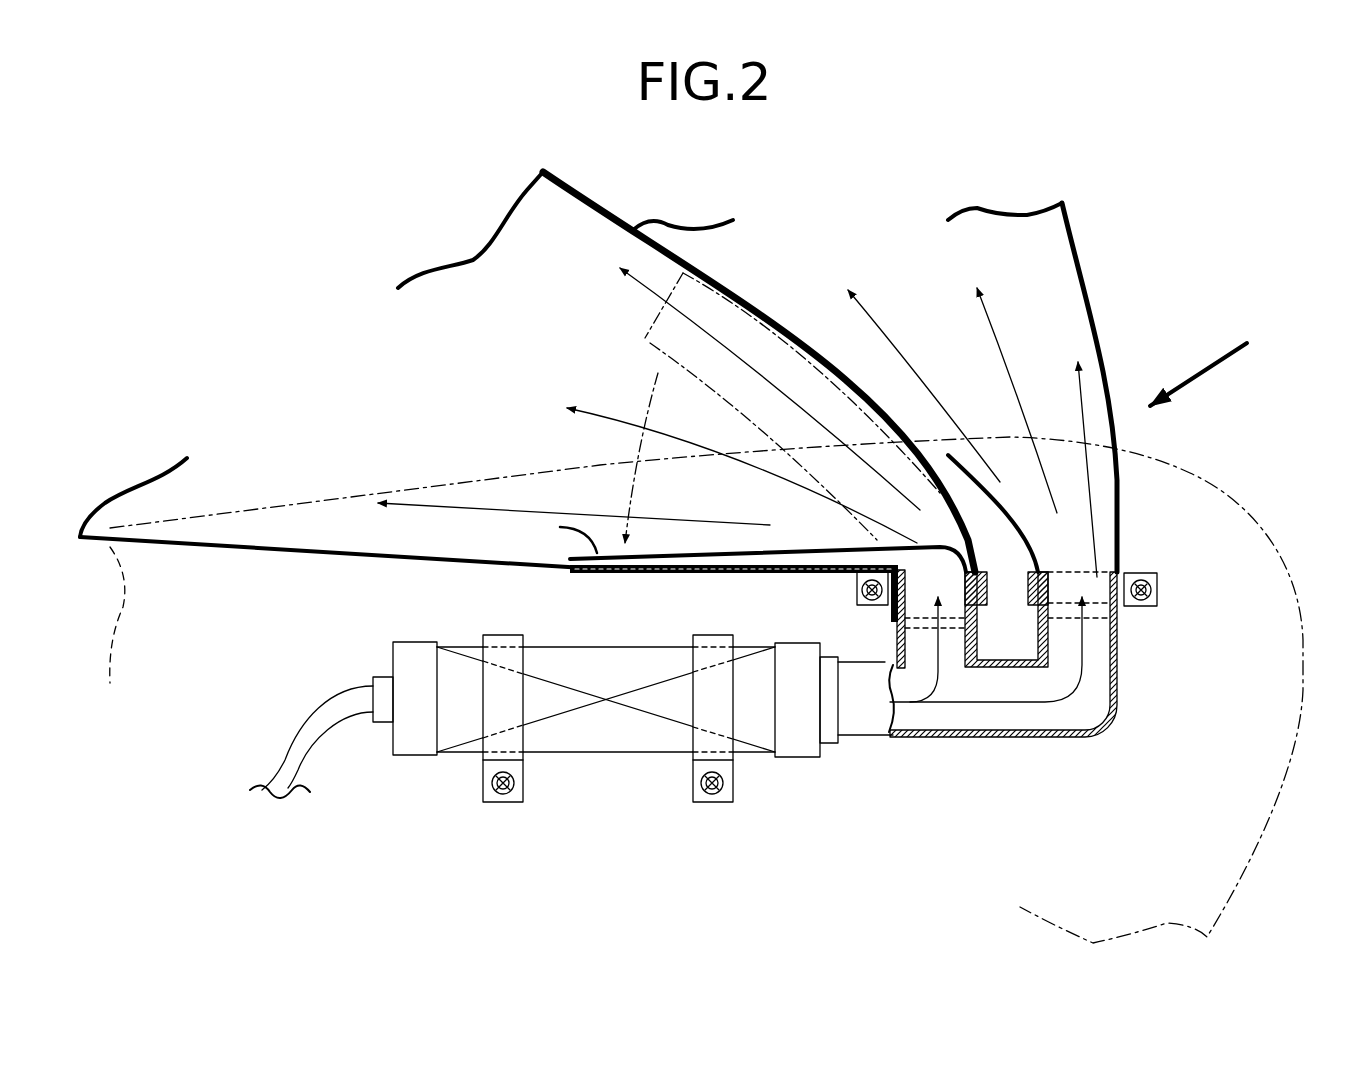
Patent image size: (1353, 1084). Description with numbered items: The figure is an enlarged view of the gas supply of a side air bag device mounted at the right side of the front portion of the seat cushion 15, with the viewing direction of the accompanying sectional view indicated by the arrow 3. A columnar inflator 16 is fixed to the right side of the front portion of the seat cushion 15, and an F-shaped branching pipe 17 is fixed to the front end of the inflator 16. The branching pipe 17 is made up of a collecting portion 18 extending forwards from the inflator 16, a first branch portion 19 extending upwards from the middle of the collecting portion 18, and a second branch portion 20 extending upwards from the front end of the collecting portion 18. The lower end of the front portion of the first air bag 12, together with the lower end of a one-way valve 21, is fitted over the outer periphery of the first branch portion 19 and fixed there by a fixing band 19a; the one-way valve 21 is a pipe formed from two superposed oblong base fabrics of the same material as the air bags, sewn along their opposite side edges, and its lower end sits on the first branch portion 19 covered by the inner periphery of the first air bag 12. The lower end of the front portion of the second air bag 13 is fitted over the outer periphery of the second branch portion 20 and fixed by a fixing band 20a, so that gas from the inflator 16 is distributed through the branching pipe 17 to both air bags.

The line 3-3 view indicator 3 is at (1218, 355).
The first air bag 12 is at (580, 193).
The second air bag 13 is at (1090, 277).
The seat cushion 15 is at (1190, 473).
The inflator 16 is at (604, 757).
The branching pipe 17 is at (1040, 745).
The collecting portion 18 is at (973, 738).
The first branch portion 19 is at (897, 642).
The fixing band 19a is at (985, 590).
The second branch portion 20 is at (1117, 672).
The fixing band 20a is at (1028, 595).
The one-way valve 21 is at (645, 338).